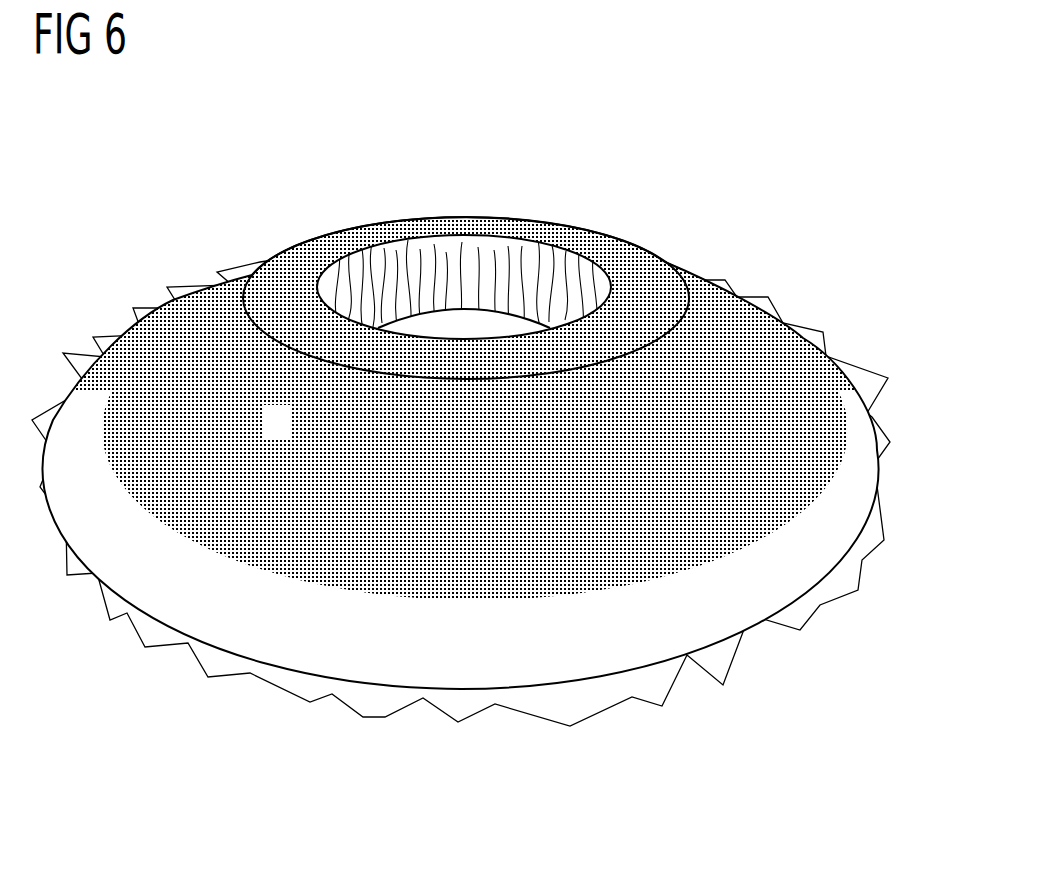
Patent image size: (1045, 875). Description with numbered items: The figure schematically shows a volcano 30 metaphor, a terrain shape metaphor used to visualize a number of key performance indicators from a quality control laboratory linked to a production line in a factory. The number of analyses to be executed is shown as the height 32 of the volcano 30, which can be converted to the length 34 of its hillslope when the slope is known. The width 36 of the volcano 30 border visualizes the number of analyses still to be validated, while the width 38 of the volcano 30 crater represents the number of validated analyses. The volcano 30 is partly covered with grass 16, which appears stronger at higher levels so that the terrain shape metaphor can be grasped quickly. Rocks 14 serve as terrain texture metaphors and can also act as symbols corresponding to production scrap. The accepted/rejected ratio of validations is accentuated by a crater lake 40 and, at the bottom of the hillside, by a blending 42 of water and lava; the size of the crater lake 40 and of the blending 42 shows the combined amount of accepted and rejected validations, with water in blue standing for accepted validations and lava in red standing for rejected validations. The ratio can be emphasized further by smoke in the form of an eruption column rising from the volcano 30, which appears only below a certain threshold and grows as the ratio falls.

The volcano 30 is at (157, 180).
The rocks 14 is at (510, 250).
The grass 16 is at (293, 470).
The height 32 is at (900, 290).
The length of hillslope 34 is at (877, 420).
The width of volcano border 36 is at (678, 265).
The width of volcano crater 38 is at (610, 165).
The crater lake 40 is at (463, 318).
The blending of water and lava 42 is at (583, 707).